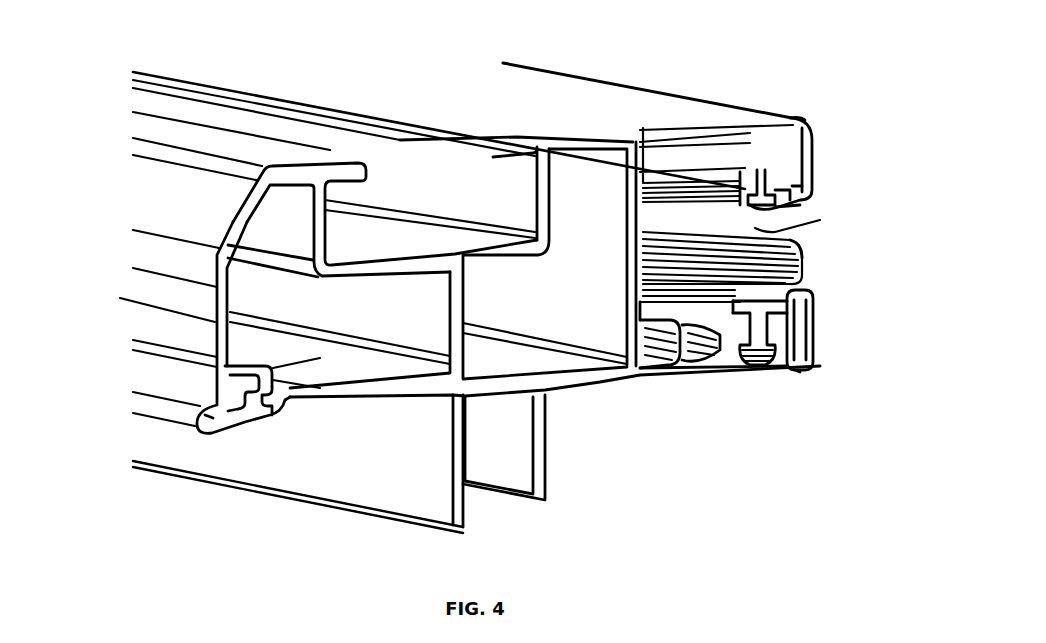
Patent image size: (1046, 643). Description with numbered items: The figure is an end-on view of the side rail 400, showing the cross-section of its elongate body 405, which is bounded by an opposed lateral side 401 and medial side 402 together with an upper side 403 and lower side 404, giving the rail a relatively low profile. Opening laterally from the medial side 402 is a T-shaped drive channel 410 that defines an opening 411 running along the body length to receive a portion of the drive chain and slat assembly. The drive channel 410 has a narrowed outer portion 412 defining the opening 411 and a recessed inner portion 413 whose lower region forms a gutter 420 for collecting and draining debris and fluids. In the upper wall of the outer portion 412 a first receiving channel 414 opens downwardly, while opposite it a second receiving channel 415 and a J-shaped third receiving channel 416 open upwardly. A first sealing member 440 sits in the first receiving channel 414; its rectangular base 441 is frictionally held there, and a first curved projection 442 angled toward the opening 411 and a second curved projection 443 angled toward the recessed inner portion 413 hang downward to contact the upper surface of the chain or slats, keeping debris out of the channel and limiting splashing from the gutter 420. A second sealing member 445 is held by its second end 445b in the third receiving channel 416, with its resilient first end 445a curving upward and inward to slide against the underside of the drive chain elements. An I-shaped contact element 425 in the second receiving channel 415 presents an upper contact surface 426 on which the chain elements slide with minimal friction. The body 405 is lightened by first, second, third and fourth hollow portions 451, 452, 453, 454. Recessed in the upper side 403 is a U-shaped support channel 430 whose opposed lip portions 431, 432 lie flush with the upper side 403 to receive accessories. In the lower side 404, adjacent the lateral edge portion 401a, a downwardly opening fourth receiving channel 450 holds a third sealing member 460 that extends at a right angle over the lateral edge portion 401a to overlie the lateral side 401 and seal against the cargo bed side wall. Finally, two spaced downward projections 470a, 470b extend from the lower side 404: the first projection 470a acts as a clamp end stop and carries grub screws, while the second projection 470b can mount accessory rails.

The side rail 400 is at (191, 36).
The lateral side 401 is at (193, 214).
The lateral edge portion 401a is at (213, 405).
The medial side 402 is at (808, 148).
The upper side 403 is at (413, 100).
The lower side 404 is at (573, 404).
The elongate body 405 is at (535, 93).
The drive channel 410 is at (660, 213).
The opening 411 is at (820, 220).
The outer portion 412 is at (800, 187).
The recessed inner portion 413 is at (708, 380).
The first receiving channel 414 is at (802, 117).
The second receiving channel 415 is at (768, 380).
The third receiving channel 416 is at (775, 368).
The gutter 420 is at (678, 380).
The contact element 425 is at (740, 380).
The upper contact surface 426 is at (787, 253).
The support channel 430 is at (316, 200).
The lip portion 431 is at (343, 163).
The lip portion 432 is at (510, 138).
The first sealing member 440 is at (757, 177).
The base 441 is at (777, 180).
The first curved projection 442 is at (870, 213).
The second curved projection 443 is at (813, 202).
The second sealing member 445 is at (813, 320).
The first end 445a is at (793, 279).
The second end 445b is at (800, 372).
The fourth receiving channel 450 is at (240, 342).
The first hollow portion 451 is at (290, 400).
The second hollow portion 452 is at (563, 153).
The third hollow portion 453 is at (642, 380).
The fourth hollow portion 454 is at (640, 180).
The third sealing member 460 is at (213, 418).
The first projection 470a is at (345, 466).
The second projection 470b is at (520, 458).